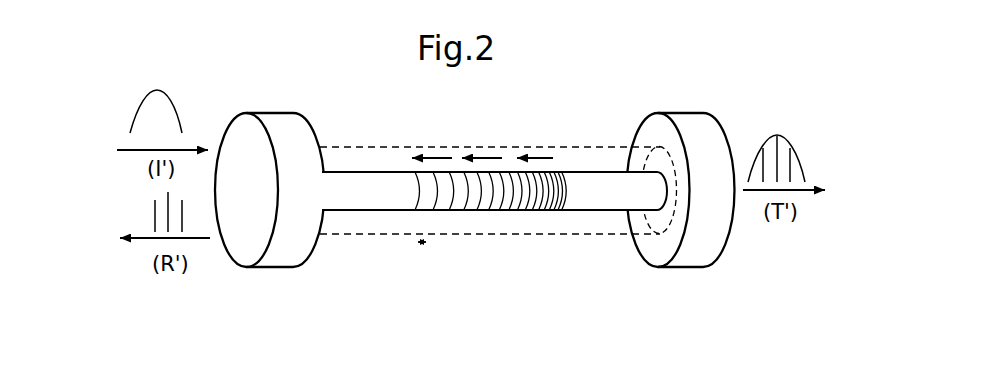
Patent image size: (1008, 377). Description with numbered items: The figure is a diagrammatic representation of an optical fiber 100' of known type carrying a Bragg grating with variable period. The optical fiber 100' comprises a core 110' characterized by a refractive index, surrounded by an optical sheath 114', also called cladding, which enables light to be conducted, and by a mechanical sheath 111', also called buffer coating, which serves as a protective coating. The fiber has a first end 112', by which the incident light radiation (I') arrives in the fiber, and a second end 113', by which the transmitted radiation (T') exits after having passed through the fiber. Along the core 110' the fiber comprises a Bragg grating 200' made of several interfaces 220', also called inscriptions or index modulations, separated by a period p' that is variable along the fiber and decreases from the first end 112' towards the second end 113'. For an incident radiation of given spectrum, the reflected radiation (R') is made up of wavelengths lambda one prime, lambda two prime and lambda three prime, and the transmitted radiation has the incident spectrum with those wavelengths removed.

The optical fiber 100' is at (486, 170).
The core 110' is at (494, 234).
The mechanical sheath 111' is at (251, 196).
The first end 112' is at (228, 165).
The second end 113' is at (710, 170).
The optical sheath 114' is at (663, 153).
The Bragg grating 200' is at (490, 232).
The interfaces 220' is at (490, 220).